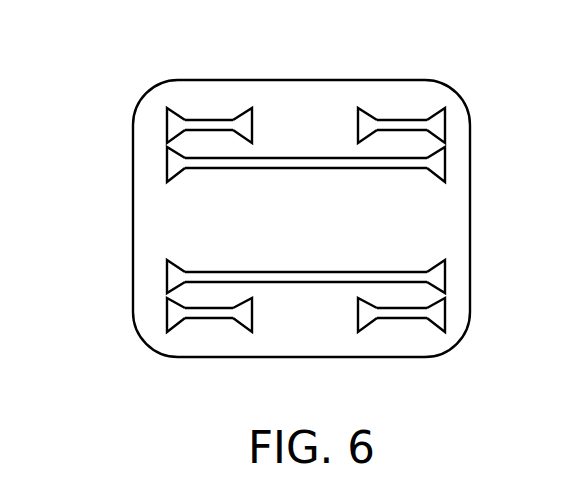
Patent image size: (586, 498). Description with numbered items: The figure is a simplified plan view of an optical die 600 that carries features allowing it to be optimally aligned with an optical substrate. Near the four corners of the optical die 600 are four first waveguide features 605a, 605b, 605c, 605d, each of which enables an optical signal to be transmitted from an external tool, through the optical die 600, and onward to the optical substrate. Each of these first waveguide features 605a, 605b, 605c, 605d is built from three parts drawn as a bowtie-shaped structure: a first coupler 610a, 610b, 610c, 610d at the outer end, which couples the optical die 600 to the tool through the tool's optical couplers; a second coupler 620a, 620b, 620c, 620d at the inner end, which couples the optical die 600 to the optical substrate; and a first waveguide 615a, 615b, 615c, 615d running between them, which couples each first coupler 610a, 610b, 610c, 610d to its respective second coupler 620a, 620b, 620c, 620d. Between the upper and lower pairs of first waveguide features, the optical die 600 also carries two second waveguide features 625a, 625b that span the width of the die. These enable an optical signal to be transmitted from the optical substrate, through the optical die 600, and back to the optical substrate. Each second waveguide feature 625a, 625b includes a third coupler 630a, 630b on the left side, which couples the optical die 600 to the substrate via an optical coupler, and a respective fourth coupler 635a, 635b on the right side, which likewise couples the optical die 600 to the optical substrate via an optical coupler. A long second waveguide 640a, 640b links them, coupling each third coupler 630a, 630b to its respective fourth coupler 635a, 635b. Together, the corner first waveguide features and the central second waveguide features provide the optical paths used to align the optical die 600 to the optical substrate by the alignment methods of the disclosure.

The optical die 600 is at (308, 358).
The first waveguide feature 605a is at (266, 96).
The first waveguide feature 605b is at (345, 106).
The first waveguide feature 605c is at (256, 340).
The first waveguide feature 605d is at (454, 304).
The first coupler 610a is at (167, 127).
The first coupler 610b is at (440, 127).
The first coupler 610c is at (167, 313).
The first coupler 610d is at (447, 318).
The first waveguide 615a is at (210, 121).
The first waveguide 615b is at (407, 121).
The first waveguide 615c is at (207, 320).
The first waveguide 615d is at (403, 322).
The second coupler 620a is at (243, 114).
The second coupler 620b is at (368, 122).
The second coupler 620c is at (240, 320).
The second coupler 620d is at (368, 320).
The second waveguide feature 625a is at (314, 182).
The second waveguide feature 625b is at (319, 256).
The third coupler 630a is at (167, 165).
The third coupler 630b is at (167, 277).
The fourth coupler 635a is at (443, 165).
The fourth coupler 635b is at (443, 278).
The second waveguide 640a is at (240, 169).
The second waveguide 640b is at (224, 272).